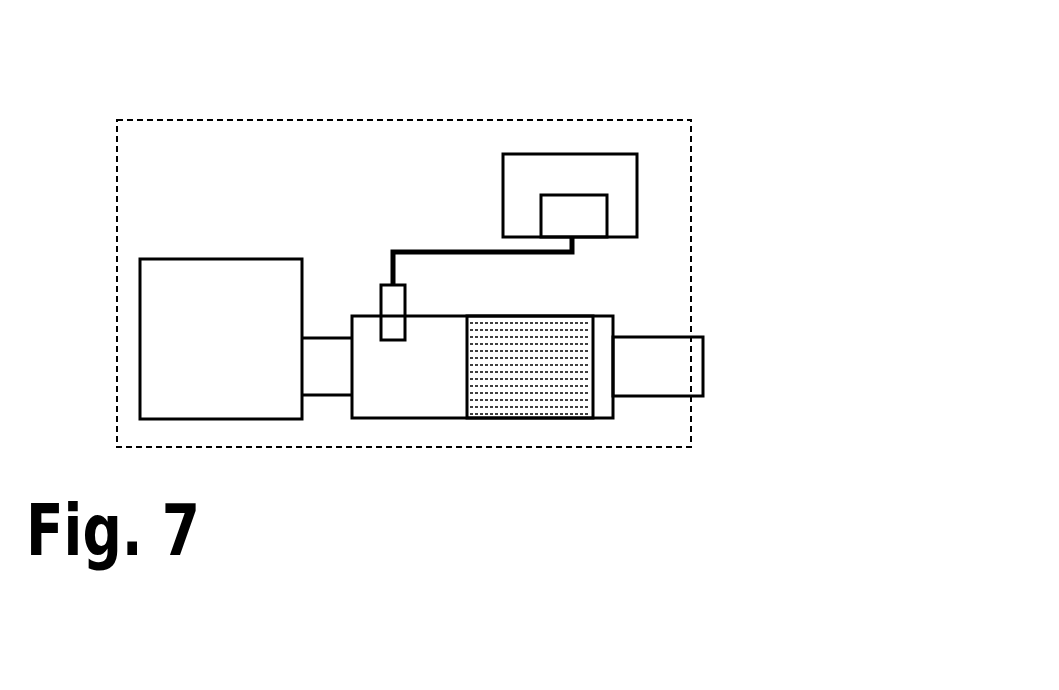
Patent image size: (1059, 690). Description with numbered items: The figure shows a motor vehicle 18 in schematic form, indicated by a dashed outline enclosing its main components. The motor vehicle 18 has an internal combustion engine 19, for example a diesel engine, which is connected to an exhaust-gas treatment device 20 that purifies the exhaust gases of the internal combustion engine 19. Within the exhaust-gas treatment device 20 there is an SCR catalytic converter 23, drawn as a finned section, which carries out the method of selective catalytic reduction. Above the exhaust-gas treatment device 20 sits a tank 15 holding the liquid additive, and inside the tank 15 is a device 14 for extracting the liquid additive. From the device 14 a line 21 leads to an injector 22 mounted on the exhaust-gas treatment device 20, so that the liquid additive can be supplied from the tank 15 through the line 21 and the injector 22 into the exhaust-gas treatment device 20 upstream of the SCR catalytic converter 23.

The motor vehicle 18 is at (693, 80).
The internal combustion engine 19 is at (218, 259).
The exhaust-gas treatment device 20 is at (378, 418).
The line 21 is at (546, 256).
The injector 22 is at (381, 287).
The SCR catalytic converter 23 is at (467, 394).
The tank 15 is at (503, 193).
The device 14 is at (607, 220).